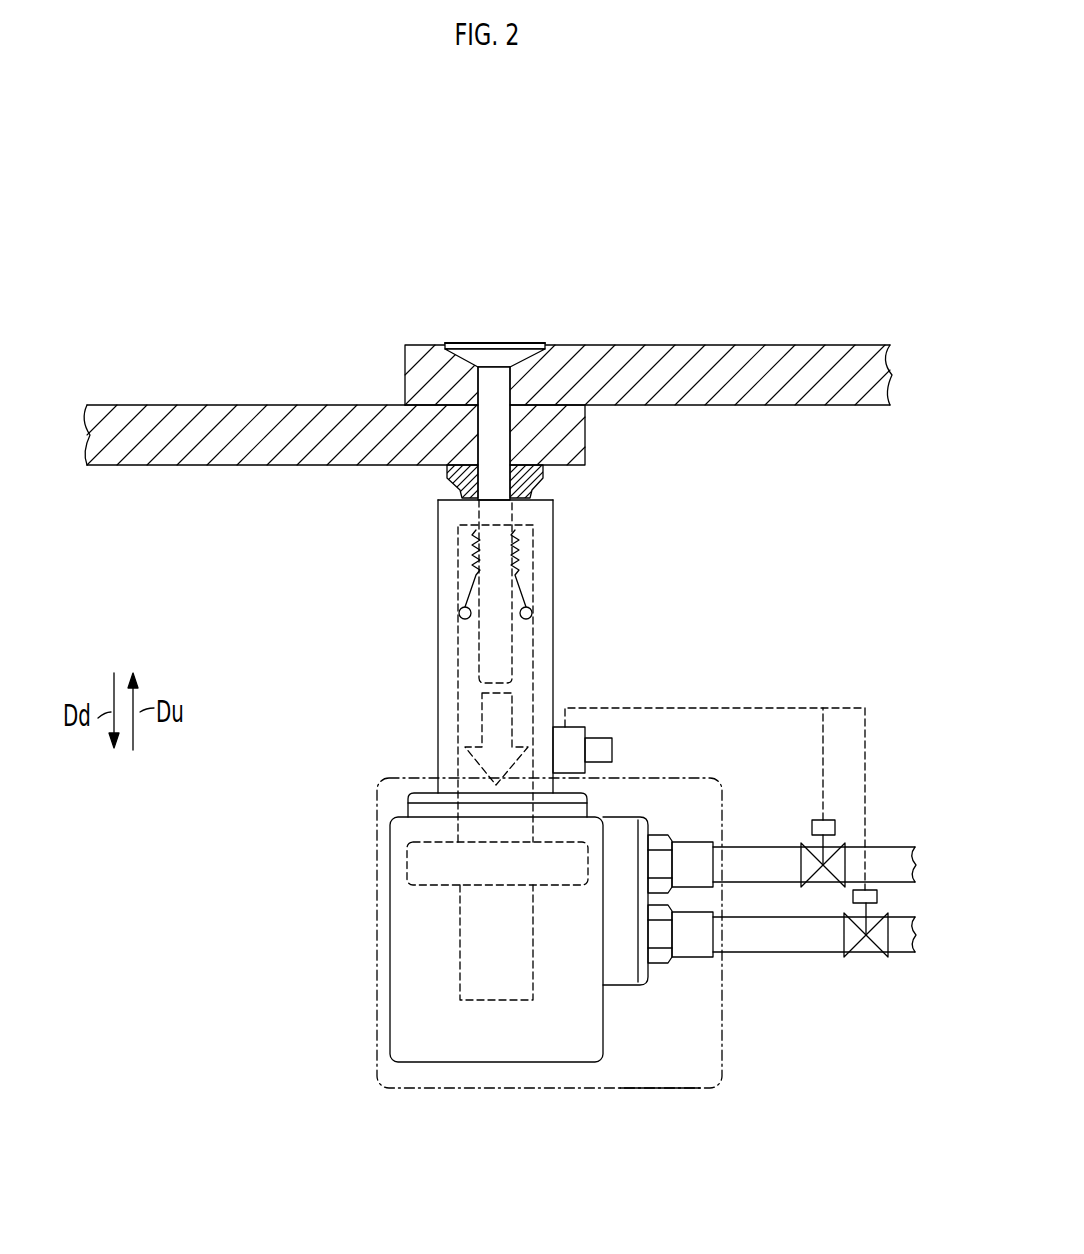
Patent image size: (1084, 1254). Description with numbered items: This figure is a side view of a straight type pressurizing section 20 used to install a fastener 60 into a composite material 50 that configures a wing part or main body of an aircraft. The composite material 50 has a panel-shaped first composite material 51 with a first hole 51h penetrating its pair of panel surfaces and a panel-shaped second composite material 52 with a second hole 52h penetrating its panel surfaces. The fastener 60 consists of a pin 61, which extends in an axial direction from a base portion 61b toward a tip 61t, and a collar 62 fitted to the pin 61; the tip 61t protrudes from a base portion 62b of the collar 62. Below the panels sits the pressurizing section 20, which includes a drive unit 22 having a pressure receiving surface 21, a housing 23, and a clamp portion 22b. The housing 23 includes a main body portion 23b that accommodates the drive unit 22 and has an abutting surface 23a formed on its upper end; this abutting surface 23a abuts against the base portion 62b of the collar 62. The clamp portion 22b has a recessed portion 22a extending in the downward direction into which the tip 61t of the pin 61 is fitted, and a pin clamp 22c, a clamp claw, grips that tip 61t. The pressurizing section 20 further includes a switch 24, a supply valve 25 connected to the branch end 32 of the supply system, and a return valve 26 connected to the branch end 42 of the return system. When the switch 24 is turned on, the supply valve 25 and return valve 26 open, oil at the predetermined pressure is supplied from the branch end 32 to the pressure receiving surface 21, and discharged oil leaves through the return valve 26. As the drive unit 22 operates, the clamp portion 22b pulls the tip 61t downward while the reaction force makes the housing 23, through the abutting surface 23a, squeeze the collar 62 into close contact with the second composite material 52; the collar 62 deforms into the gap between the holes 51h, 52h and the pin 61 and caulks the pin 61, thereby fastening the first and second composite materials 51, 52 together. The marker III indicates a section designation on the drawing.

The pressurizing section 20 is at (378, 926).
The pressure receiving surface 21 is at (427, 840).
The drive unit 22 is at (480, 762).
The recessed portion 22a is at (485, 600).
The clamp portion 22b is at (466, 545).
The pin clamp 22c is at (531, 566).
The housing 23 is at (480, 765).
The abutting surface 23a is at (542, 492).
The main body portion 23b is at (447, 770).
The switch 24 is at (580, 727).
The supply valve 25 is at (812, 822).
The return valve 26 is at (877, 896).
The branch end 32 is at (885, 847).
The branch end 42 is at (886, 955).
The composite material 50 is at (488, 364).
The first composite material 51 is at (793, 352).
The first hole 51h is at (484, 382).
The second composite material 52 is at (240, 415).
The second hole 52h is at (484, 420).
The fastener 60 is at (518, 452).
The pin 61 is at (466, 333).
The base portion 61b is at (505, 340).
The tip 61t is at (513, 673).
The collar 62 is at (515, 506).
The base portion 62b is at (532, 510).
The section III is at (643, 1089).